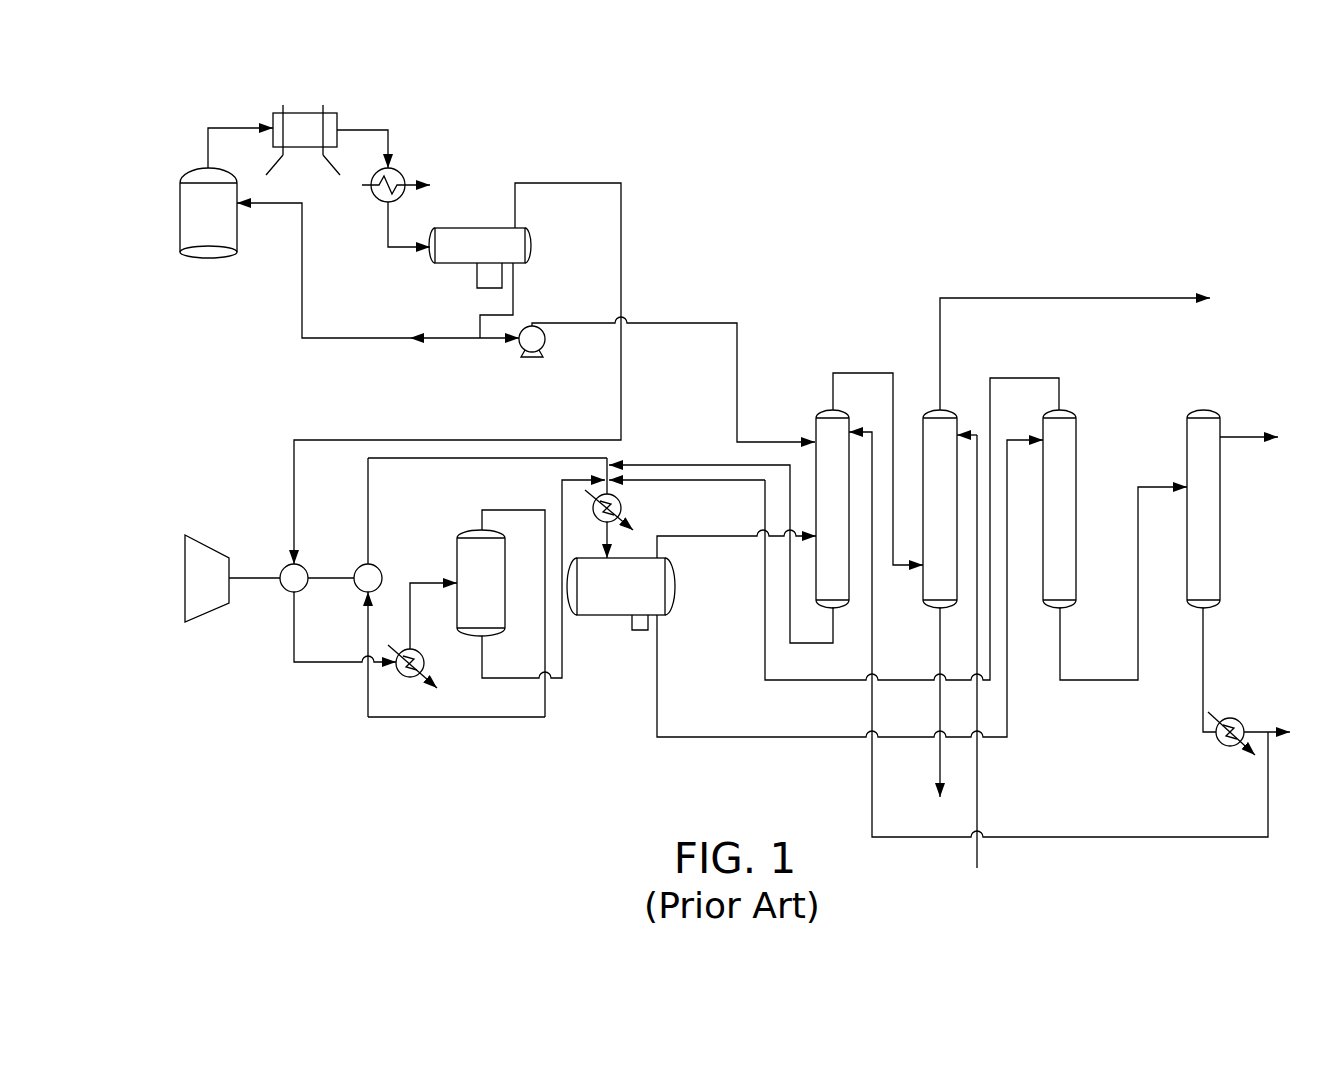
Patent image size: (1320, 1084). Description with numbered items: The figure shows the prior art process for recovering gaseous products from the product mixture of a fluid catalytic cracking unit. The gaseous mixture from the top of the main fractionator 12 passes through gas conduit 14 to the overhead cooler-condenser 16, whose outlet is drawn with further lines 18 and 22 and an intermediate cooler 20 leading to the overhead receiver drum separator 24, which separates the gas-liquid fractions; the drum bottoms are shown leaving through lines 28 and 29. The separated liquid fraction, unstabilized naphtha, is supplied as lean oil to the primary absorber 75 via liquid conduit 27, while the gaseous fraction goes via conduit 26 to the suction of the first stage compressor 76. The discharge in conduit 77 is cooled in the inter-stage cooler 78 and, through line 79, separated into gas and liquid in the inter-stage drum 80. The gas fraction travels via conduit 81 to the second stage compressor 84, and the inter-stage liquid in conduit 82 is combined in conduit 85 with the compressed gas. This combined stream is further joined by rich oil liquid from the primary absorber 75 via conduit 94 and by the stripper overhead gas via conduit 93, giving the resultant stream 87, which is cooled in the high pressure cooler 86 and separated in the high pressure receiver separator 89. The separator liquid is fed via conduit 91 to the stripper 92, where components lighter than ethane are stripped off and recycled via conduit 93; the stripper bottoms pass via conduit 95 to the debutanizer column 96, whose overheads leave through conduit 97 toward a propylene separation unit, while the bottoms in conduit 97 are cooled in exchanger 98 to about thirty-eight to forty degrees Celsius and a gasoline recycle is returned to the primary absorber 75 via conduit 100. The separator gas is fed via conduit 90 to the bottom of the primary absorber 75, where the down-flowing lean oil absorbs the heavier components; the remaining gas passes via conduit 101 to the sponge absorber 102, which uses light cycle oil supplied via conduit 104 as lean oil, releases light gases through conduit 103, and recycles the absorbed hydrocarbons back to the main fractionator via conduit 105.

The main fractionator 12 is at (180, 219).
The gas conduit 14 is at (238, 126).
The overhead cooler-condenser 16 is at (307, 112).
The heated stream line 18 is at (370, 126).
The cooler 20 is at (405, 178).
The cooled stream line 22 is at (387, 225).
The overhead receiver drum separator 24 is at (482, 227).
The conduit 26 is at (600, 183).
The liquid conduit 27 is at (681, 323).
The bottoms line 28 is at (514, 293).
The recycle line with pump 29 is at (457, 340).
The primary absorber 75 is at (826, 411).
The first stage compressor 76 is at (291, 563).
The conduit 77 is at (294, 628).
The inter-stage cooler 78 is at (404, 676).
The heated gas line 79 is at (413, 600).
The inter-stage drum 80 is at (471, 530).
The conduit 81 is at (503, 511).
The conduit 82 is at (496, 680).
The second stage compressor 84 is at (378, 558).
The conduit 85 is at (399, 461).
The high pressure cooler 86 is at (624, 506).
The resultant stream 87 is at (566, 533).
The high pressure receiver separator 89 is at (607, 618).
The conduit 90 is at (711, 540).
The conduit 91 is at (658, 695).
The stripper 92 is at (1077, 450).
The conduit 93 is at (1027, 378).
The conduit 94 is at (806, 645).
The conduit 95 is at (1138, 630).
The debutanizer column 96 is at (1222, 488).
The conduit 97 is at (1244, 433).
The exchanger 98 is at (1229, 750).
The conduit 100 is at (1107, 836).
The conduit 101 is at (862, 373).
The sponge absorber 102 is at (932, 411).
The conduit 103 is at (1046, 293).
The conduit 104 is at (978, 848).
The conduit 105 is at (940, 757).